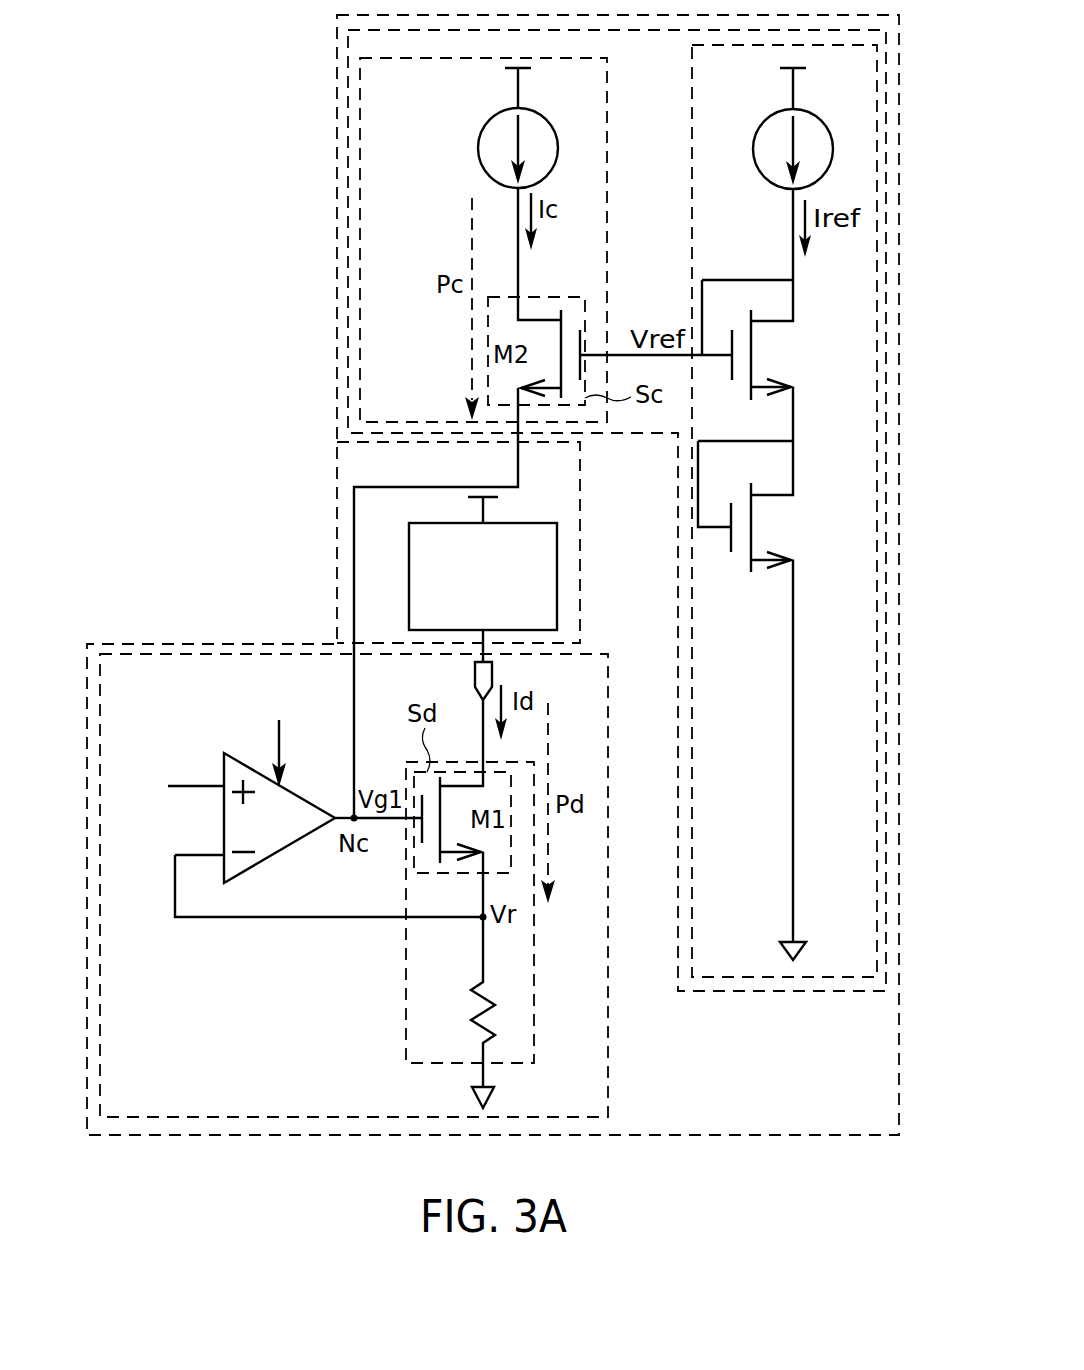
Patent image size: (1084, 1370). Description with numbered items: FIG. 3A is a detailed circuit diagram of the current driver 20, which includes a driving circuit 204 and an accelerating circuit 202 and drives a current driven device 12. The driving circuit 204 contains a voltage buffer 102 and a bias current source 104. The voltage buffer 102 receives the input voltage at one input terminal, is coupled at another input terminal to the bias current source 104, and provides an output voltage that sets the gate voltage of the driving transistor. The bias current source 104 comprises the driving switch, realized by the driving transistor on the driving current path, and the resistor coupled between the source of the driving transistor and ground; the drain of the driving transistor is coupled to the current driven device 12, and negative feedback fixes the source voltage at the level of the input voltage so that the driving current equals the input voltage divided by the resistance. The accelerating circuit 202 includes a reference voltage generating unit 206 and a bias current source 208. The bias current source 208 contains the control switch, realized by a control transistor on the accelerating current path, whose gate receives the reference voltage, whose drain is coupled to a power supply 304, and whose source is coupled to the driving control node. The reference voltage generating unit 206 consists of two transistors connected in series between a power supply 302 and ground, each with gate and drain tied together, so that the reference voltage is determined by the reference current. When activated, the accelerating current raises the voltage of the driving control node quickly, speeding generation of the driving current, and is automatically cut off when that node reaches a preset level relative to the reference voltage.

The current driver 20 is at (337, 176).
The accelerating circuit 202 is at (348, 103).
The bias current source 208 is at (360, 239).
The power supply 304 is at (478, 150).
The power supply 302 is at (753, 150).
The reference voltage generating unit 206 is at (692, 472).
The current driven device 12 is at (557, 578).
The driving circuit 204 is at (253, 654).
The voltage buffer 102 is at (282, 857).
The bias current source 104 is at (406, 999).